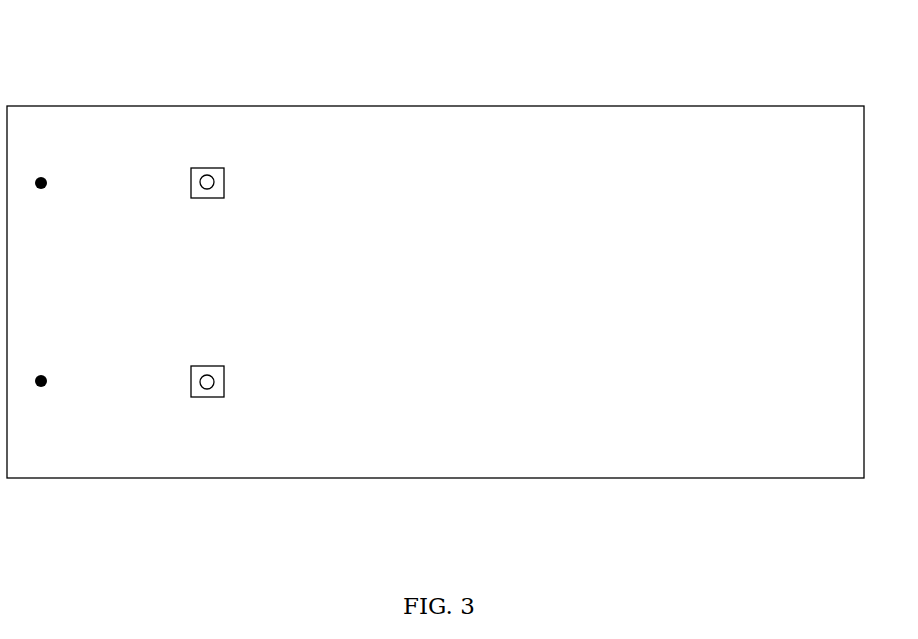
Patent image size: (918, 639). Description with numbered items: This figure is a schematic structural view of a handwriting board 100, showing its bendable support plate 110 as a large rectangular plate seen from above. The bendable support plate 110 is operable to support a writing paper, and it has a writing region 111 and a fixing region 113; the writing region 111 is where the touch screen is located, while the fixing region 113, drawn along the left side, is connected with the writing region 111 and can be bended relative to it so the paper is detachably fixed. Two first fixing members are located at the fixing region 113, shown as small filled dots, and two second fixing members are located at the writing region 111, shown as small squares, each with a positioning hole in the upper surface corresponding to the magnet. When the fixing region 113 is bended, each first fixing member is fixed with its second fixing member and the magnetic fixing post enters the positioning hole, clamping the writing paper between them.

The handwriting board 100 is at (421, 54).
The bendable support plate 110 is at (233, 117).
The writing region 111 is at (530, 402).
The fixing region 113 is at (85, 413).